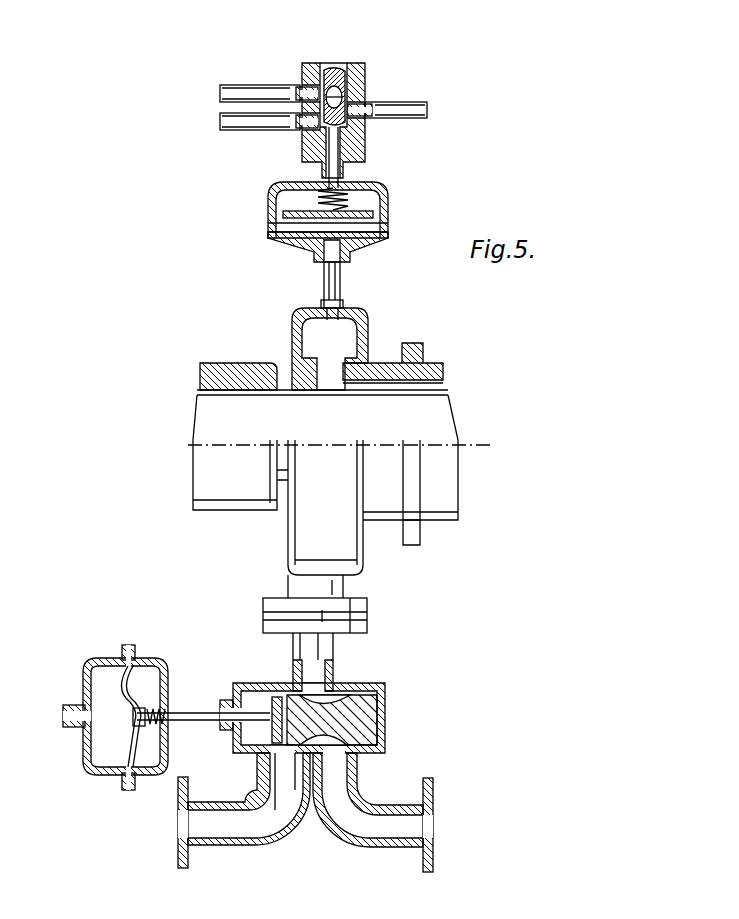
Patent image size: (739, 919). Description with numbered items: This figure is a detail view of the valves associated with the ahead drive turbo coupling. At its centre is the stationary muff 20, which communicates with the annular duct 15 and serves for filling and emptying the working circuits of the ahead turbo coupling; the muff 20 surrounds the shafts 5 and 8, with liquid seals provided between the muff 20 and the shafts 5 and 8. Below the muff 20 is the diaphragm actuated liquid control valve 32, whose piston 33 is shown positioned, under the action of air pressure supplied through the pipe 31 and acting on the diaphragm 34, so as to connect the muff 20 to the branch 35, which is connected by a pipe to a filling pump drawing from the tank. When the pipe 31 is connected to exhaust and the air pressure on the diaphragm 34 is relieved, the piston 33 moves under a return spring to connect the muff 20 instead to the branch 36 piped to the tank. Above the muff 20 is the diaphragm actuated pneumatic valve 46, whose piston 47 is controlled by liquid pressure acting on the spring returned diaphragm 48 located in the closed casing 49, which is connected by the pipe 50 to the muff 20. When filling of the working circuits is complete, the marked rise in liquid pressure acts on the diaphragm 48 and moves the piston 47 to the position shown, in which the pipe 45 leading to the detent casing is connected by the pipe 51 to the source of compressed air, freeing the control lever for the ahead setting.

The shaft 5 is at (382, 362).
The shaft 8 is at (388, 512).
The annular duct 15 is at (447, 387).
The stationary muff 20 is at (310, 522).
The pipe 31 is at (70, 728).
The diaphragm actuated liquid control valve 32 is at (392, 720).
The piston 33 is at (370, 730).
The diaphragm 34 is at (103, 672).
The branch 35 is at (390, 848).
The branch 36 is at (187, 822).
The pipe 45 is at (404, 119).
The diaphragm actuated pneumatic valve 46 is at (365, 74).
The piston 47 is at (332, 75).
The diaphragm 48 is at (275, 240).
The closed casing 49 is at (392, 240).
The pipe 50 is at (337, 277).
The pipe 51 is at (257, 92).